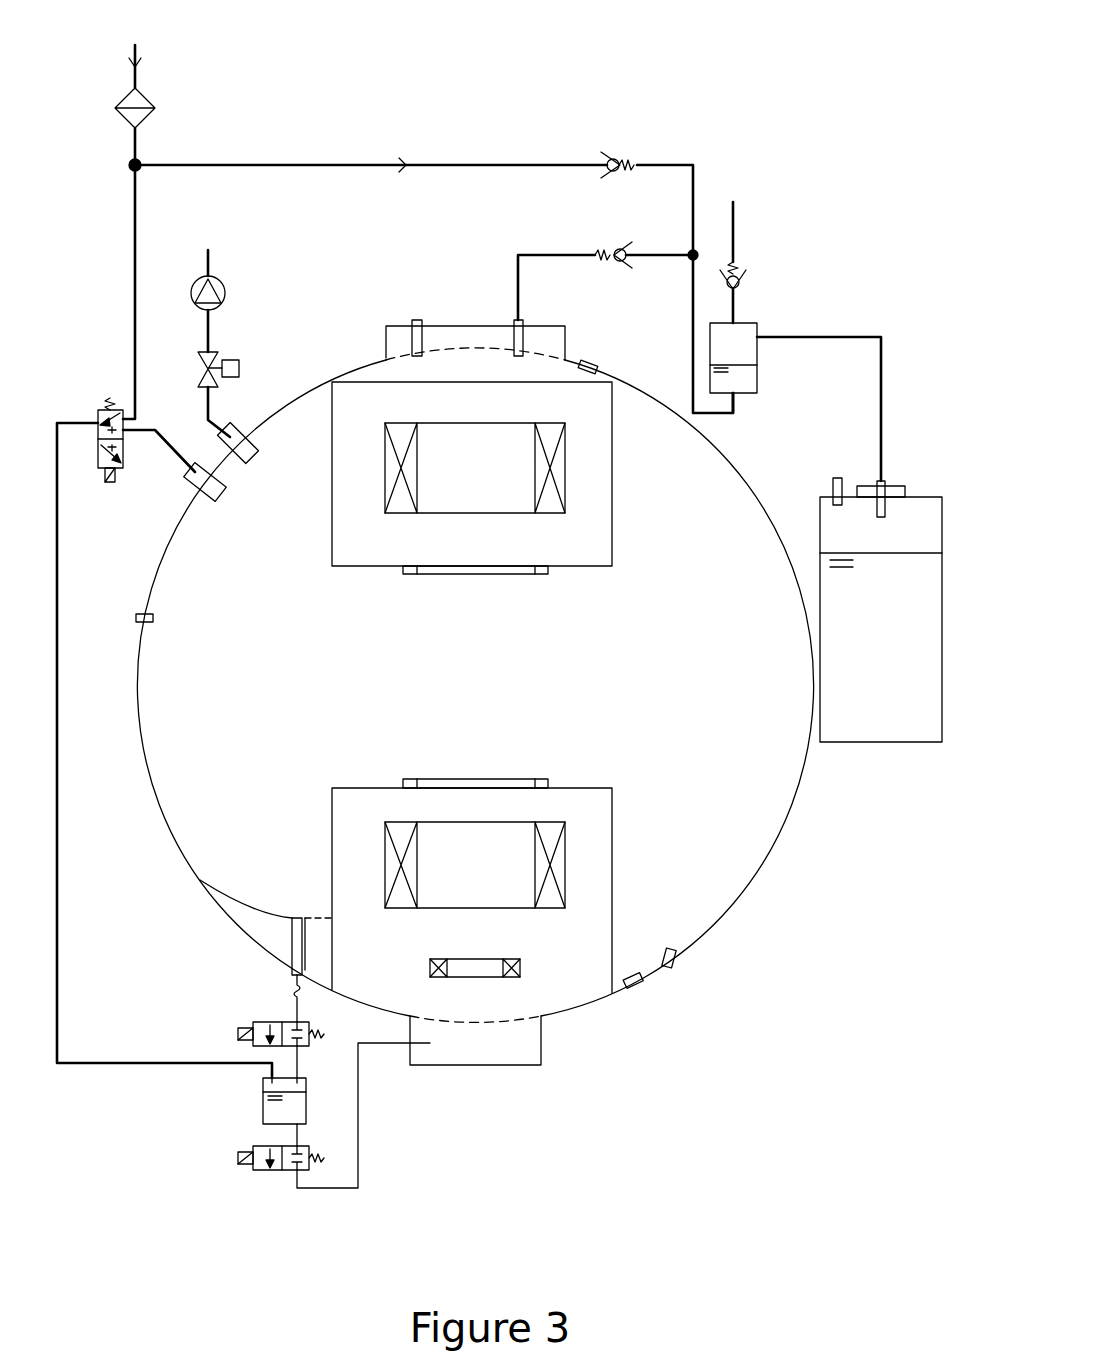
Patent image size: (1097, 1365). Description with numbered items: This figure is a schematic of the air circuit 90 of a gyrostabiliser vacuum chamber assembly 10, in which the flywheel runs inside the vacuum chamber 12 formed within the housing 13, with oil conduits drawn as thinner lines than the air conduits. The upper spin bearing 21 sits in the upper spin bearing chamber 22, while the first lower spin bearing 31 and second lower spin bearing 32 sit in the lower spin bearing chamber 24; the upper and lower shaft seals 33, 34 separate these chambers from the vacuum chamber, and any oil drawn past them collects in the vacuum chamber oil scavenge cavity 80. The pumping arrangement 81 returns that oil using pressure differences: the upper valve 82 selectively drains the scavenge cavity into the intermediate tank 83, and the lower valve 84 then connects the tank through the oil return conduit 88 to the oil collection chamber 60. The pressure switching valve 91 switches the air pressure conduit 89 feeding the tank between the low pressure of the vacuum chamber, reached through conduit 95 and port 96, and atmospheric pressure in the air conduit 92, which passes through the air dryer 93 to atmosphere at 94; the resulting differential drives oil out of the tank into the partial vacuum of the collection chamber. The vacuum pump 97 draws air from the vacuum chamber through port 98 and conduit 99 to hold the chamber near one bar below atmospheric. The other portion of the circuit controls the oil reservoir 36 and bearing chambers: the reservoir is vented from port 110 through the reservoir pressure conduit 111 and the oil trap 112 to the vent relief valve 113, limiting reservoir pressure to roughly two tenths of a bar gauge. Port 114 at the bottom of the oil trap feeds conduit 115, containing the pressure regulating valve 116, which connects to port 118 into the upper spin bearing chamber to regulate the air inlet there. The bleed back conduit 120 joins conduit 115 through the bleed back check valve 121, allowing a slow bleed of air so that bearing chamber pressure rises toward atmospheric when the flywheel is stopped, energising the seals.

The vacuum chamber assembly 10 is at (770, 967).
The vacuum chamber 12 is at (755, 825).
The housing 13 is at (737, 898).
The upper spin bearing 21 is at (565, 490).
The upper spin bearing chamber 22 is at (583, 553).
The lower spin bearing chamber 24 is at (332, 818).
The first lower spin bearing 31 is at (565, 862).
The second lower spin bearing 32 is at (520, 968).
The upper shaft seal 33 is at (540, 575).
The lower shaft seal 34 is at (540, 778).
The oil reservoir 36 is at (872, 733).
The oil collection chamber 60 is at (512, 1048).
The vacuum chamber oil scavenge cavity 80 is at (292, 945).
The pumping arrangement 81 is at (165, 1215).
The upper valve 82 is at (262, 1022).
The intermediate tank 83 is at (263, 1112).
The lower valve 84 is at (262, 1172).
The oil return conduit 88 is at (360, 1140).
The air pressure conduit 89 is at (58, 795).
The air circuit 90 is at (737, 88).
The pressure switching valve 91 is at (97, 415).
The air conduit 92 is at (133, 225).
The air dryer 93 is at (118, 115).
The atmosphere 94 is at (137, 48).
The conduit 95 is at (155, 428).
The port 96 is at (192, 485).
The vacuum pump 97 is at (225, 288).
The port 98 is at (255, 447).
The conduit 99 is at (210, 405).
The port 110 is at (877, 480).
The reservoir pressure conduit 111 is at (882, 338).
The oil trap 112 is at (757, 375).
The vent relief valve 113 is at (745, 285).
The port 114 is at (740, 402).
The conduit 115 is at (690, 292).
The pressure regulating valve 116 is at (625, 250).
The port 118 is at (515, 322).
The bleed back conduit 120 is at (350, 163).
The bleed back check valve 121 is at (607, 160).